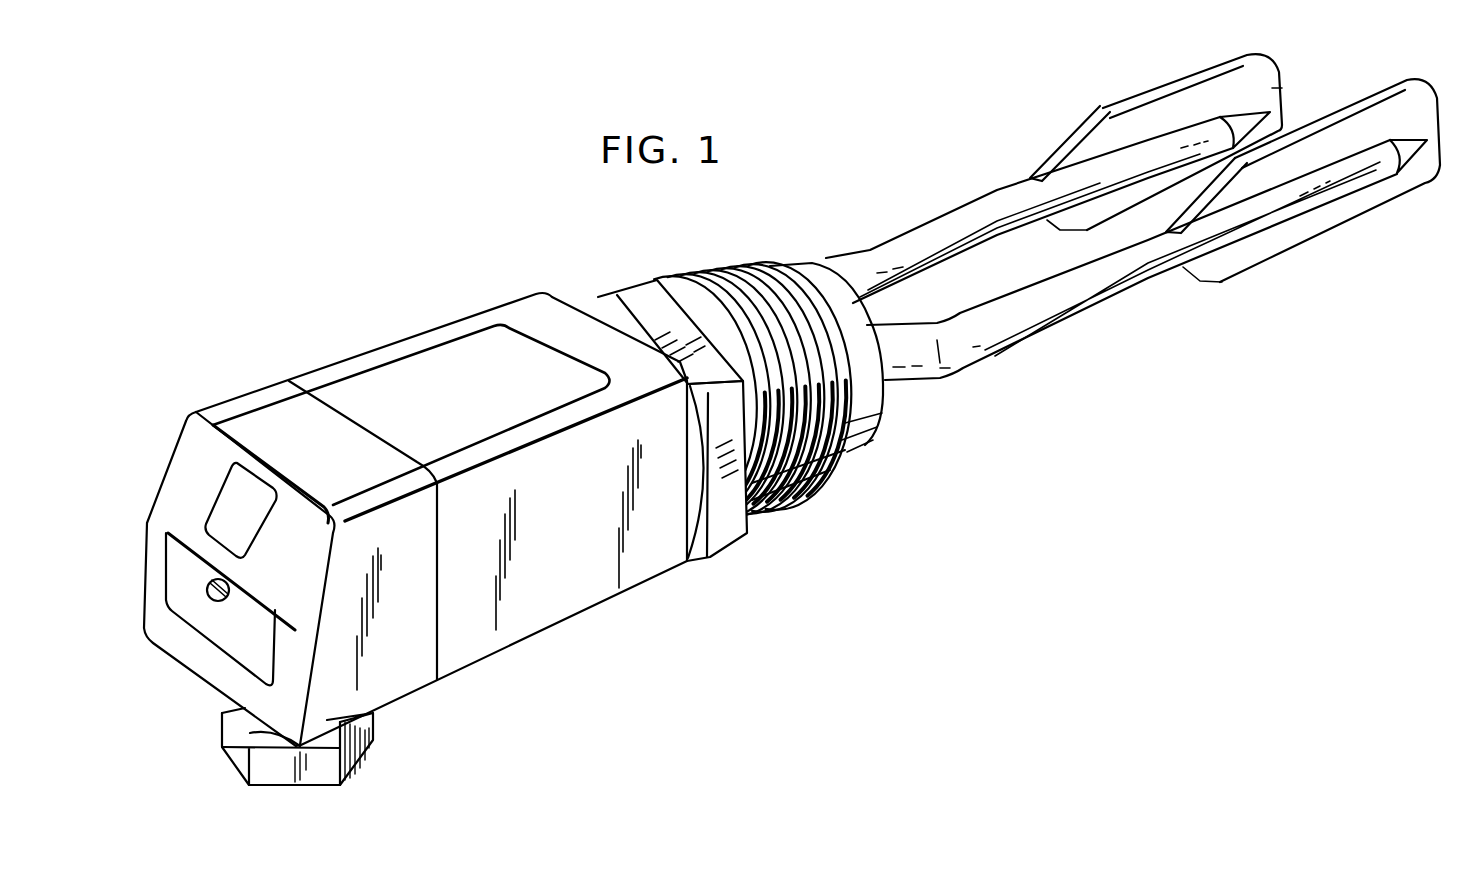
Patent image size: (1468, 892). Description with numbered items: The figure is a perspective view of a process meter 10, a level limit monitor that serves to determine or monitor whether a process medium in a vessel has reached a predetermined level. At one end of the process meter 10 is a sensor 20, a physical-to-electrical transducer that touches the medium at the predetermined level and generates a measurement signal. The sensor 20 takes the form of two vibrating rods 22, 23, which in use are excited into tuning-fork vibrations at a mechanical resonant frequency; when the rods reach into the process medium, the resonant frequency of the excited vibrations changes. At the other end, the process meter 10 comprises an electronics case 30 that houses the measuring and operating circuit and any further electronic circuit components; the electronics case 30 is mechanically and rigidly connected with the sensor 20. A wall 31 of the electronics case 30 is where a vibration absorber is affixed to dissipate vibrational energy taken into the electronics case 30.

The process meter 10 is at (716, 242).
The sensor 20 is at (818, 399).
The vibrating rod 22 is at (870, 250).
The vibrating rod 23 is at (1027, 318).
The electronics case 30 is at (426, 315).
The wall 31 is at (586, 585).